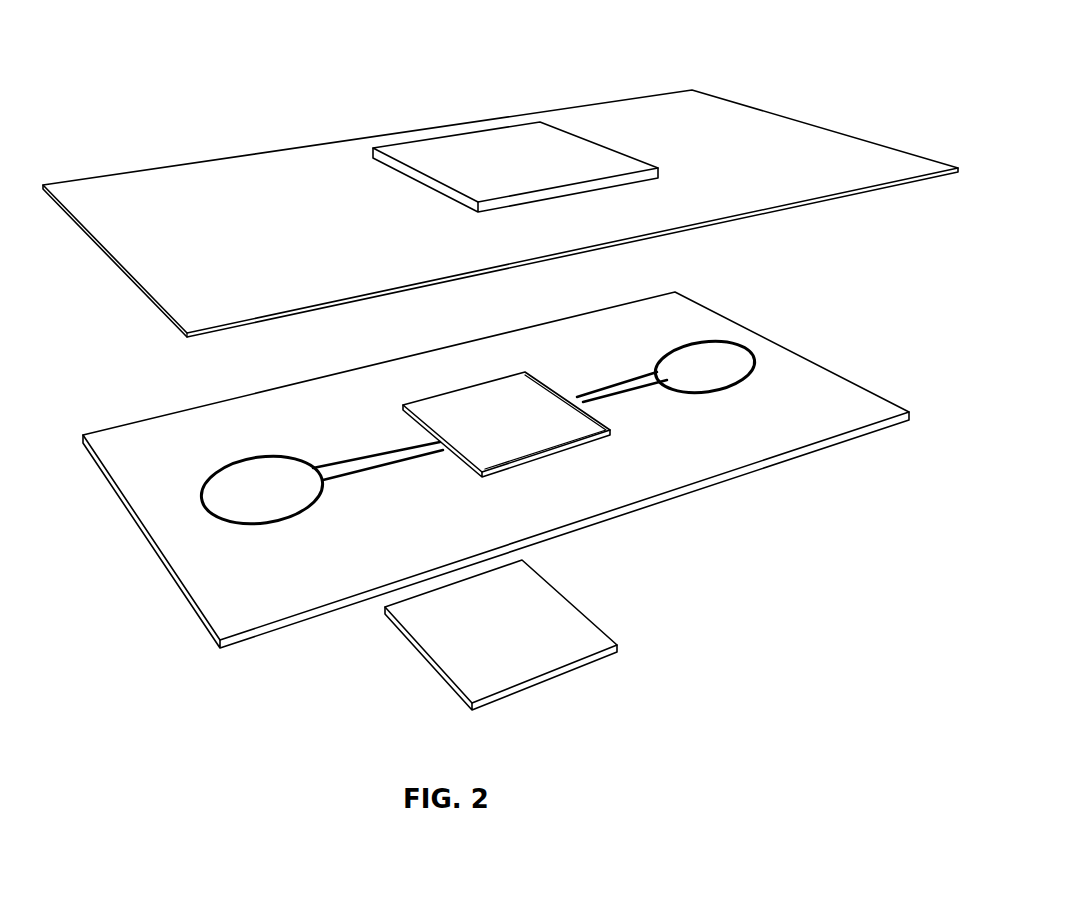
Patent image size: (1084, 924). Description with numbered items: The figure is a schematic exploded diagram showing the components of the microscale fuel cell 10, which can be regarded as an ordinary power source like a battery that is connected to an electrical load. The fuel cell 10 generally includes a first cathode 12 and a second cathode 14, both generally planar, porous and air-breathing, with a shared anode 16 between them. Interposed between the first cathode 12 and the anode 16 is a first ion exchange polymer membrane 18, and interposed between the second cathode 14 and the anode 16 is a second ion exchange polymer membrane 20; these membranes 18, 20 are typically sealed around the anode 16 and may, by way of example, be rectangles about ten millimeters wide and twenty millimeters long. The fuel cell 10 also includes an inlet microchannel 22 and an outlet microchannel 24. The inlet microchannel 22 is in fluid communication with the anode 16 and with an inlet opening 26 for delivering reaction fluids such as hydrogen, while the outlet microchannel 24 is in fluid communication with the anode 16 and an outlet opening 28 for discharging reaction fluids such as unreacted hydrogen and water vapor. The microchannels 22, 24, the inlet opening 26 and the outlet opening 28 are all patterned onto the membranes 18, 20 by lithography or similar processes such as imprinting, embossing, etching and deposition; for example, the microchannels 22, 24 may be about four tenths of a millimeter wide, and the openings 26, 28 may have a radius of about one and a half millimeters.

The microscale fuel cell 10 is at (731, 58).
The first cathode 12 is at (461, 158).
The second cathode 14 is at (430, 650).
The anode 16 is at (495, 418).
The first ion exchange polymer membrane 18 is at (267, 166).
The second ion exchange polymer membrane 20 is at (793, 394).
The inlet microchannel 22 is at (360, 452).
The outlet microchannel 24 is at (600, 390).
The inlet opening 26 is at (258, 480).
The outlet opening 28 is at (710, 370).